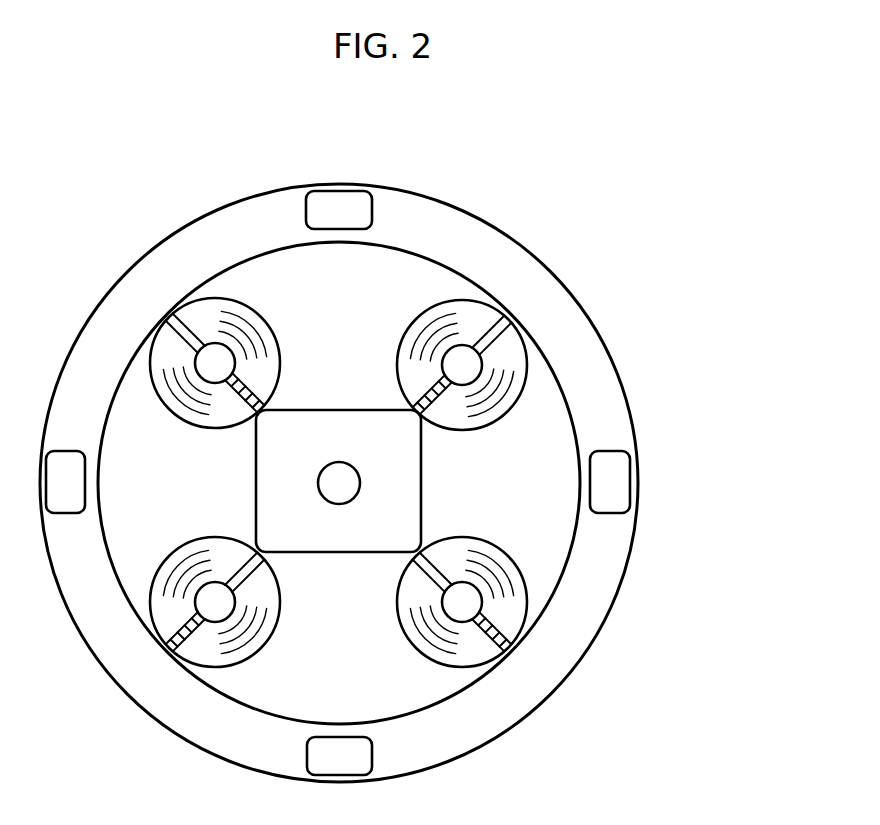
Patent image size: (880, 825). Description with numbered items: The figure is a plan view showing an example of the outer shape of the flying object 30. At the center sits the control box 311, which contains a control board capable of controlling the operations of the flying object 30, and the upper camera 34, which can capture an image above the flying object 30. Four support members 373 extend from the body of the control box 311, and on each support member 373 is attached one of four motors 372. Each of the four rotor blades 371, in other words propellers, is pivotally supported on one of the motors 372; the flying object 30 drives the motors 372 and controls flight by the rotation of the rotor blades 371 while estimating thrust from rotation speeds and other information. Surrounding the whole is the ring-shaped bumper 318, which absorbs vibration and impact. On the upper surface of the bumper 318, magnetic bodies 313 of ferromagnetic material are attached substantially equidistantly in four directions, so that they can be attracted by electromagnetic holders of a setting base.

The flying object 30 is at (568, 228).
The ring-shaped bumper 318 is at (587, 343).
The magnetic bodies 313 is at (617, 484).
The control box 311 is at (345, 410).
The upper camera 34 is at (325, 483).
The rotor blades 371 is at (338, 482).
The motors 372 is at (452, 607).
The support members 373 is at (247, 567).